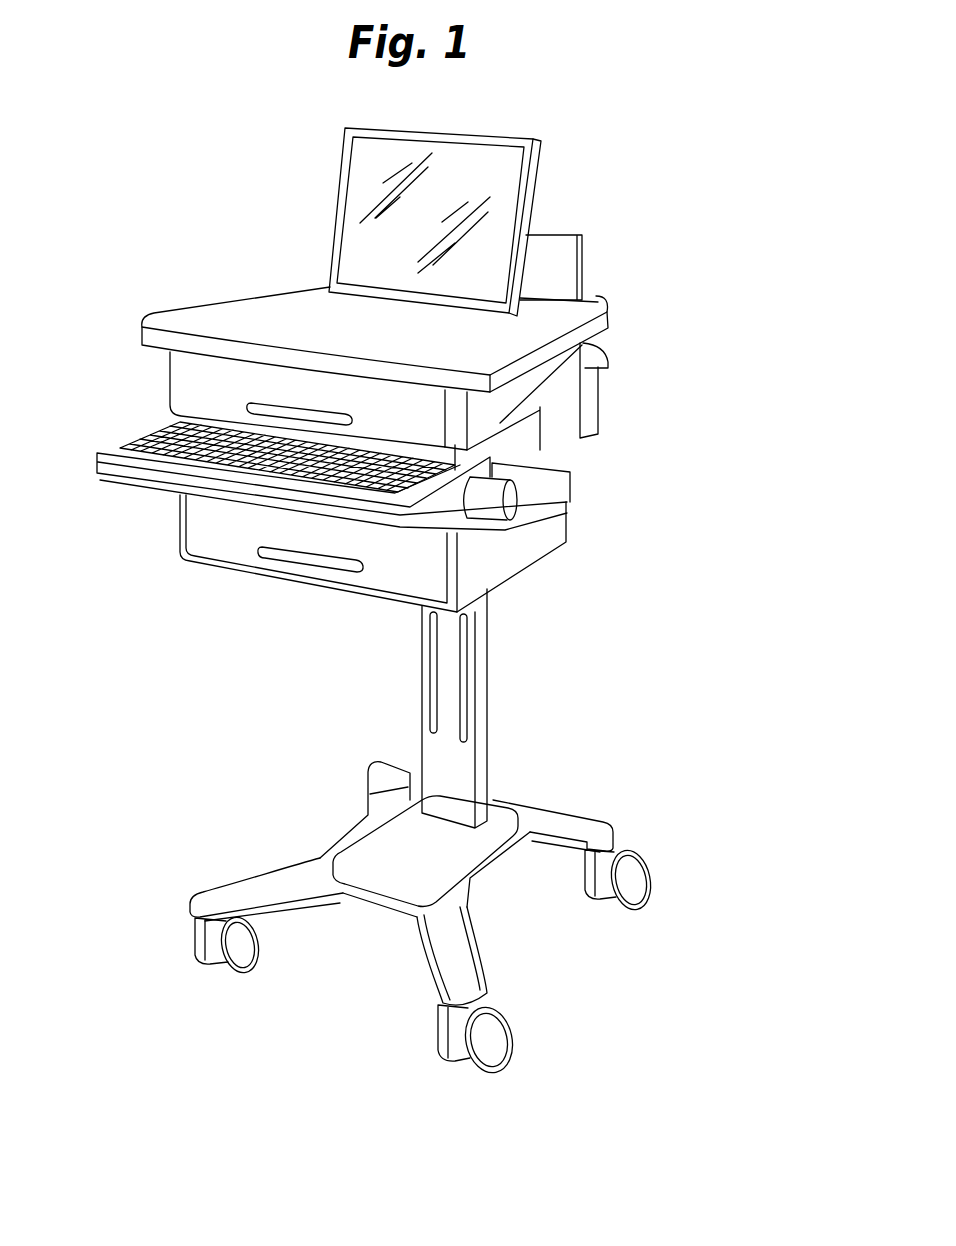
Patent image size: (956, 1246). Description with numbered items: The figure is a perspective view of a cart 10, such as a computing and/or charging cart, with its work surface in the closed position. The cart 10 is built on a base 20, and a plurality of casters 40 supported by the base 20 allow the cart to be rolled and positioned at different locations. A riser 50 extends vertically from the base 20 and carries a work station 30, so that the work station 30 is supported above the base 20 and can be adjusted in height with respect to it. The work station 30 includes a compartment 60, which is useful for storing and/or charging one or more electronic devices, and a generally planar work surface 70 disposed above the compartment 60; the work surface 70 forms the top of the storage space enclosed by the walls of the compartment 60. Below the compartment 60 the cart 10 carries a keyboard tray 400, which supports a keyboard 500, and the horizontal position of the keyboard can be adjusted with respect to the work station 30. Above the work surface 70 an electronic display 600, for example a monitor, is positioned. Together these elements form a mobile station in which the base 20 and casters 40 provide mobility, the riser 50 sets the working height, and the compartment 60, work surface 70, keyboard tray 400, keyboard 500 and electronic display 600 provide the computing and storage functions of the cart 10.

The cart 10 is at (697, 213).
The base 20 is at (572, 777).
The work station 30 is at (640, 492).
The casters 40 is at (362, 817).
The riser 50 is at (488, 690).
The compartment 60 is at (180, 378).
The work surface 70 is at (253, 310).
The keyboard tray 400 is at (138, 478).
The keyboard 500 is at (130, 443).
The electronic display 600 is at (538, 178).